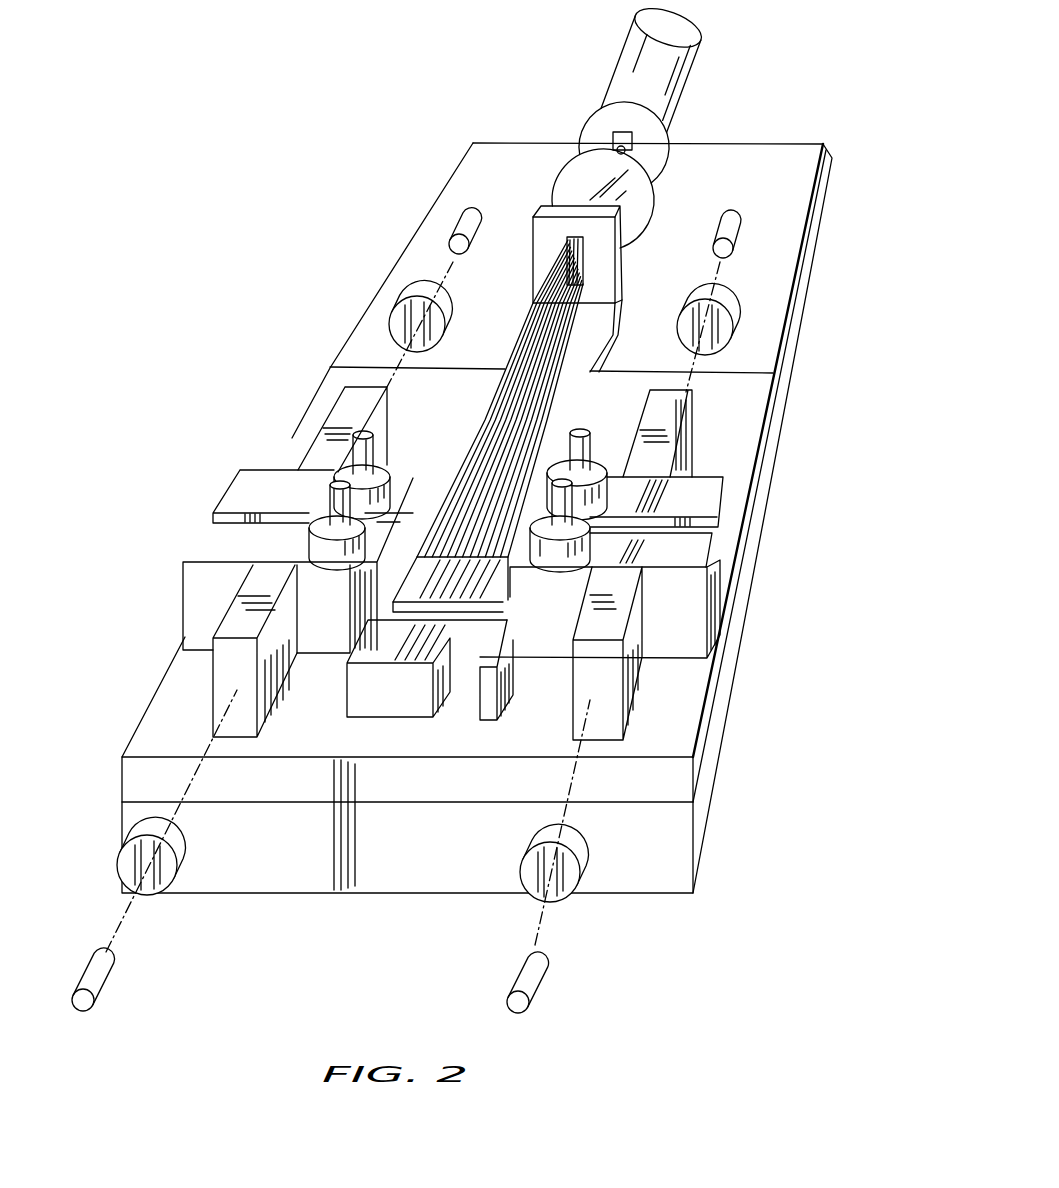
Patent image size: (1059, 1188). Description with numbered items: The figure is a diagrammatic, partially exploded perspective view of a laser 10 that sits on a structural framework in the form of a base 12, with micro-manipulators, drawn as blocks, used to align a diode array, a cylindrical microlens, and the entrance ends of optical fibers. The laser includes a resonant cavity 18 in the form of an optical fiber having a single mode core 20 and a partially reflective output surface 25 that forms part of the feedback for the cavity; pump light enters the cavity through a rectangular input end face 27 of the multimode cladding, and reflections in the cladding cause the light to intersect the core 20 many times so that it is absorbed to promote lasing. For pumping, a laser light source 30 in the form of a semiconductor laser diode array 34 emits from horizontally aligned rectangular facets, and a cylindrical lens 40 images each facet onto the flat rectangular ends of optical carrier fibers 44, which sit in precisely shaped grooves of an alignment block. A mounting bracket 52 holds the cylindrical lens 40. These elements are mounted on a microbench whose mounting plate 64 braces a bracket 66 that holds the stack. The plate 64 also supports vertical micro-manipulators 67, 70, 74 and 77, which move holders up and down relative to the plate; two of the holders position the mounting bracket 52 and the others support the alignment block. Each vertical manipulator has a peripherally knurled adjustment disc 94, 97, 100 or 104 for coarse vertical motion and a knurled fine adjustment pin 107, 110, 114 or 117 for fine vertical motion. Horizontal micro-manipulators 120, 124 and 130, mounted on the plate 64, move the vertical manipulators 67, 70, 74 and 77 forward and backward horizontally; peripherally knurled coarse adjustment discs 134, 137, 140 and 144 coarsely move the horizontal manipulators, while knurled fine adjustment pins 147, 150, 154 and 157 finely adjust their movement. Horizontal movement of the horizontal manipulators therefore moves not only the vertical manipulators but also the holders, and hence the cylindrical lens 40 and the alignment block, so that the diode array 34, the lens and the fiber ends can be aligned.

The laser 10 is at (335, 206).
The base 12 is at (797, 177).
The resonant cavity 18 is at (760, 76).
The single mode core 20 is at (631, 152).
The partially reflective output surface 25 is at (652, 135).
The rectangular input end face 27 is at (613, 147).
The laser light source 30 is at (503, 627).
The semiconductor laser diode array 34 is at (390, 693).
The cylindrical lens 40 is at (462, 610).
The optical carrier fibers 44 is at (500, 412).
The mounting bracket 52 is at (392, 612).
The mounting plate 64 is at (744, 401).
The bracket 66 is at (598, 262).
The micro-manipulator 67 is at (248, 488).
The micro-manipulator 70 is at (210, 548).
The micro-manipulator 74 is at (712, 598).
The micro-manipulator 77 is at (722, 526).
The knurled adjustment disc 94 is at (393, 480).
The knurled adjustment disc 97 is at (333, 550).
The knurled adjustment disc 100 is at (562, 553).
The knurled adjustment disc 104 is at (598, 488).
The knurled fine adjustment pin 107 is at (362, 452).
The knurled fine adjustment pin 110 is at (340, 507).
The knurled fine adjustment pin 114 is at (596, 522).
The knurled fine adjustment pin 117 is at (597, 418).
The horizontal micro-manipulator 120 is at (350, 414).
The horizontal micro-manipulator 124 is at (237, 623).
The horizontal micro-manipulator 130 is at (666, 424).
The coarse adjustment disc 134 is at (443, 312).
The coarse adjustment disc 137 is at (128, 867).
The coarse adjustment disc 140 is at (570, 874).
The coarse adjustment disc 144 is at (712, 302).
The fine adjustment pin 147 is at (457, 210).
The fine adjustment pin 150 is at (106, 978).
The fine adjustment pin 154 is at (538, 975).
The fine adjustment pin 157 is at (731, 226).